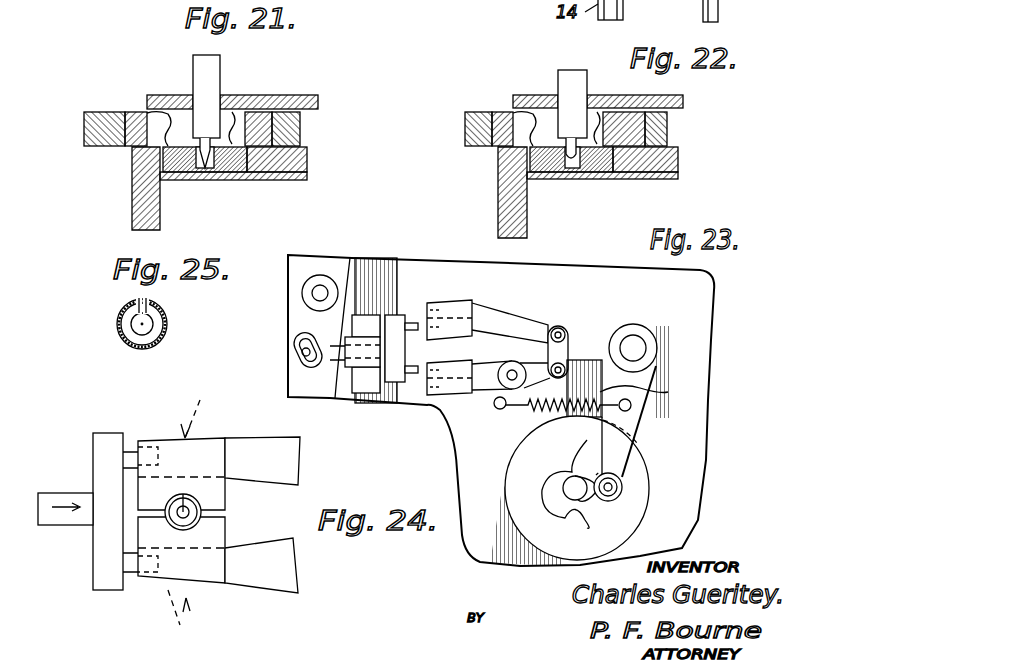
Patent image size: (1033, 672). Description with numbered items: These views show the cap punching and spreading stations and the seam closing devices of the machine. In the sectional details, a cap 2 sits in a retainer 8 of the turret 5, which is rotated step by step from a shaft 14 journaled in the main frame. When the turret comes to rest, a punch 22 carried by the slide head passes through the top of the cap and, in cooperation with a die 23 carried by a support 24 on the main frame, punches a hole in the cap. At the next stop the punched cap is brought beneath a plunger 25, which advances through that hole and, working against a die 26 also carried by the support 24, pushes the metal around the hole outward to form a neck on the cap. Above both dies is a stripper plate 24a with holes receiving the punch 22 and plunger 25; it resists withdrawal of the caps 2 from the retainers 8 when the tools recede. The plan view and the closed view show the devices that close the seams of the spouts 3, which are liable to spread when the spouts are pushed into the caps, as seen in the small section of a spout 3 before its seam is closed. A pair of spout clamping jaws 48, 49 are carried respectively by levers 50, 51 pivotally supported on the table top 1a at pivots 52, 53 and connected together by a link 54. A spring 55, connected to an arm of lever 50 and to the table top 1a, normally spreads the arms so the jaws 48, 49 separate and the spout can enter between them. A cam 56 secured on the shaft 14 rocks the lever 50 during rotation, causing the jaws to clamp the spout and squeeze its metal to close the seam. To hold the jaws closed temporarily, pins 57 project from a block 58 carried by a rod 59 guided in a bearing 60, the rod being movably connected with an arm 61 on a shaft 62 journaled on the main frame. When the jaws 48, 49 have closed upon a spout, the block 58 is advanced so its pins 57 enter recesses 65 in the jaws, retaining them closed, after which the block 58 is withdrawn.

In FIG. 23, the table top 1a is at (700, 318).
In FIG. 21, the cap 2 is at (160, 112).
In FIG. 22, the cap 2 is at (525, 112).
In FIG. 25, the spout 3 is at (168, 334).
In FIG. 24, the spout 3 is at (190, 524).
In FIG. 21, the turret 5 is at (300, 135).
In FIG. 22, the turret 5 is at (465, 128).
In FIG. 21, the retainer 8 is at (272, 112).
In FIG. 22, the retainer 8 is at (667, 130).
In FIG. 23, the shaft 14 is at (586, 470).
In FIG. 21, the punch 22 is at (205, 168).
In FIG. 21, the die 23 is at (232, 176).
In FIG. 21, the support 24 is at (307, 168).
In FIG. 22, the support 24 is at (678, 166).
In FIG. 21, the stripper plate 24a is at (318, 102).
In FIG. 22, the stripper plate 24a is at (683, 101).
In FIG. 22, the plunger 25 is at (572, 162).
In FIG. 22, the die 26 is at (605, 160).
In FIG. 24, the spout clamping jaw 48 is at (208, 496).
In FIG. 23, the spout clamping jaw 48 is at (460, 312).
In FIG. 24, the spout clamping jaw 49 is at (210, 573).
In FIG. 23, the spout clamping jaw 49 is at (456, 395).
In FIG. 24, the lever 50 is at (262, 461).
In FIG. 23, the lever 50 is at (505, 318).
In FIG. 24, the lever 51 is at (261, 565).
In FIG. 23, the lever 51 is at (505, 366).
In FIG. 23, the pivot 52 is at (635, 346).
In FIG. 23, the pivot 53 is at (502, 410).
In FIG. 23, the link 54 is at (560, 345).
In FIG. 23, the spring 55 is at (648, 372).
In FIG. 23, the cam 56 is at (608, 502).
In FIG. 24, the pin 57 is at (128, 452).
In FIG. 23, the pin 57 is at (413, 323).
In FIG. 24, the block 58 is at (93, 468).
In FIG. 23, the block 58 is at (395, 315).
In FIG. 24, the rod 59 is at (93, 515).
In FIG. 23, the rod 59 is at (332, 360).
In FIG. 23, the bearing 60 is at (365, 380).
In FIG. 23, the arm 61 is at (300, 335).
In FIG. 23, the shaft 62 is at (302, 296).
In FIG. 24, the recess 65 is at (189, 511).